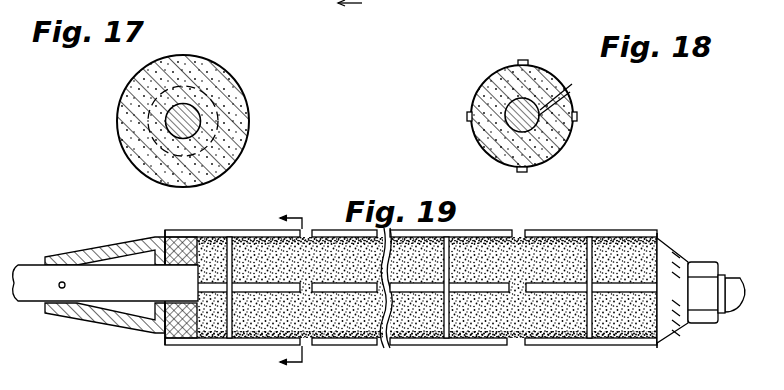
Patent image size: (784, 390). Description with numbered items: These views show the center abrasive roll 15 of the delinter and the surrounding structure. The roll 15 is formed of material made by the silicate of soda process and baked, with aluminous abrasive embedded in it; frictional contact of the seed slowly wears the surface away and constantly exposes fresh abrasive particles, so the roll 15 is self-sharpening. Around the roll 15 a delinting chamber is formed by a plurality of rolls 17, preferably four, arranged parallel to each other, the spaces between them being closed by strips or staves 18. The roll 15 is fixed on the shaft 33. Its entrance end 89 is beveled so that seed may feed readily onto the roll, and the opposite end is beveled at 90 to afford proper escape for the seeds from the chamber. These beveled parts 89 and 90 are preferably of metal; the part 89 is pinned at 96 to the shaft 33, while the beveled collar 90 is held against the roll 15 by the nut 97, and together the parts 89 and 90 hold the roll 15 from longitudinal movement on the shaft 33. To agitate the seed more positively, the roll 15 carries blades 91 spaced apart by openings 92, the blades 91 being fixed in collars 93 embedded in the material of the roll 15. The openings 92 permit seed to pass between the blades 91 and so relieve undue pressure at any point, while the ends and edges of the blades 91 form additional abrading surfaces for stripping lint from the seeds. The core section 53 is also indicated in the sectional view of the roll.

In FIG. 18, the abrasive roll 15 is at (481, 137).
In FIG. 19, the abrasive roll 15 is at (518, 240).
In FIG. 17, the rolls 17 is at (118, 132).
In FIG. 19, the strips or staves 18 is at (274, 290).
In FIG. 19, the shaft 33 is at (731, 300).
In FIG. 17, the central core 53 is at (124, 101).
In FIG. 18, the entrance end 89 is at (568, 89).
In FIG. 19, the entrance end 89 is at (115, 242).
In FIG. 17, the beveled collar 90 is at (213, 93).
In FIG. 19, the beveled collar 90 is at (660, 257).
In FIG. 18, the blades 91 is at (526, 61).
In FIG. 19, the blades 91 is at (226, 242).
In FIG. 19, the openings 92 is at (303, 342).
In FIG. 19, the collars 93 is at (233, 335).
In FIG. 18, the pin 96 is at (510, 100).
In FIG. 19, the pin 96 is at (61, 282).
In FIG. 17, the nut 97 is at (218, 118).
In FIG. 19, the nut 97 is at (703, 263).